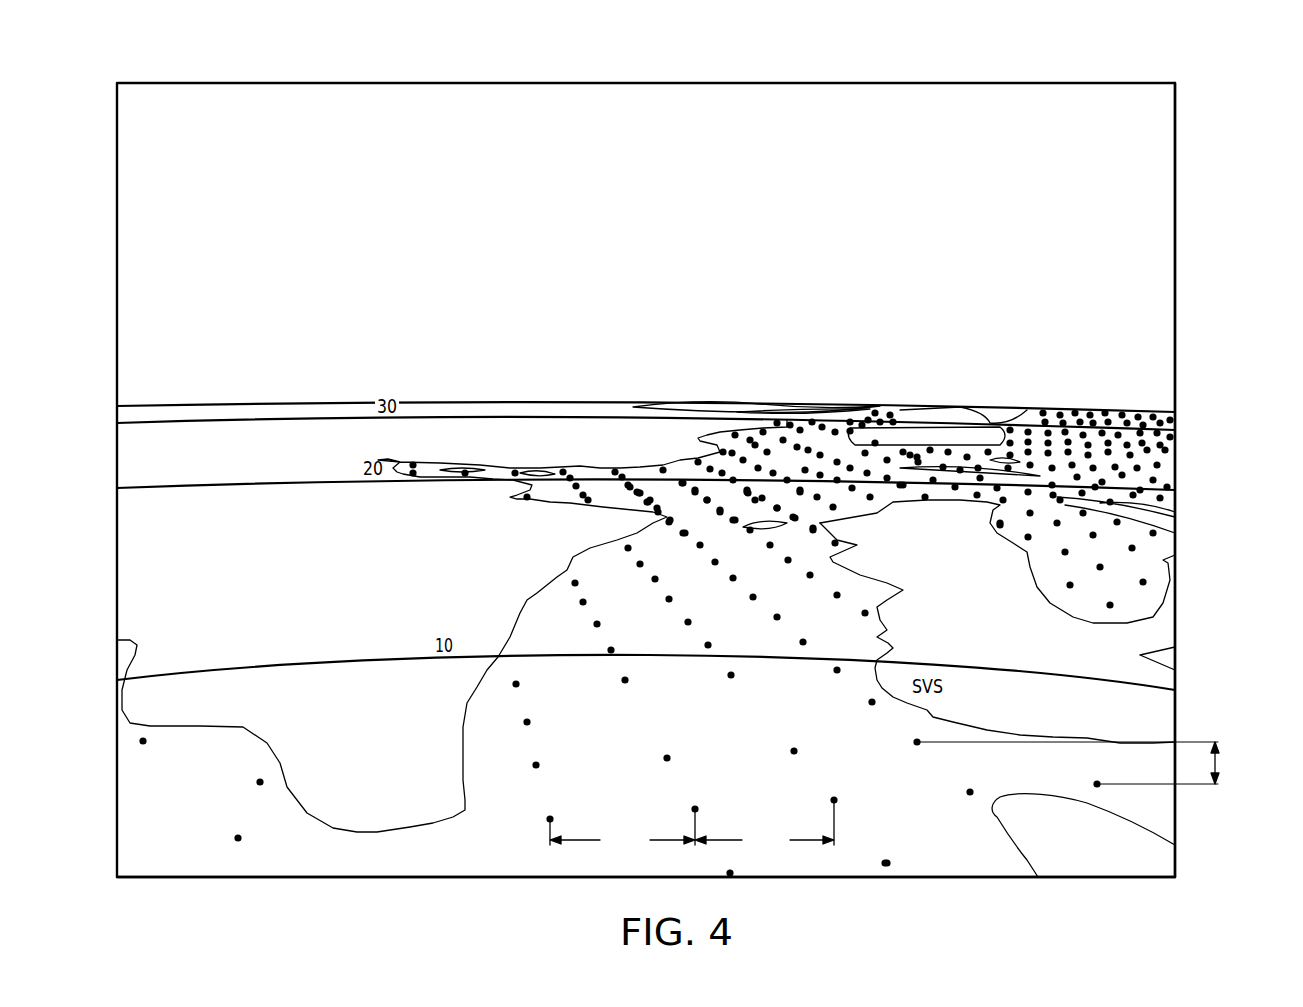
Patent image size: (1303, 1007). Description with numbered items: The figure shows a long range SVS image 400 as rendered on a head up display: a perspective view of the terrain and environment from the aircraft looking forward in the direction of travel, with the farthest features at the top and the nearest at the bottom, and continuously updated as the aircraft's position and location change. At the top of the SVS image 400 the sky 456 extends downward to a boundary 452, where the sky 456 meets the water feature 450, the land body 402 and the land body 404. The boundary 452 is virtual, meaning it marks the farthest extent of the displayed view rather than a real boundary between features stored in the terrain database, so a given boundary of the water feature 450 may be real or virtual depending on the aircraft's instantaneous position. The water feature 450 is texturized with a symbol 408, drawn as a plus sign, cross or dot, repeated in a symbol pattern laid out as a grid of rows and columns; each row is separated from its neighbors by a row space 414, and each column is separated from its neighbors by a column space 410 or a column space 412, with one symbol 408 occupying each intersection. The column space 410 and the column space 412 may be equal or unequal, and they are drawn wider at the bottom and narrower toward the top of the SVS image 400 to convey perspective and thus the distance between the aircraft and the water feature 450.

The SVS image 400 is at (830, 83).
The land body 402 is at (385, 598).
The land body 404 is at (1000, 640).
The symbol 408 is at (695, 809).
The column space 410 is at (622, 832).
The column space 412 is at (764, 827).
The row space 414 is at (1216, 762).
The water feature 450 is at (928, 862).
The boundary 452 is at (1172, 441).
The sky 456 is at (1157, 300).